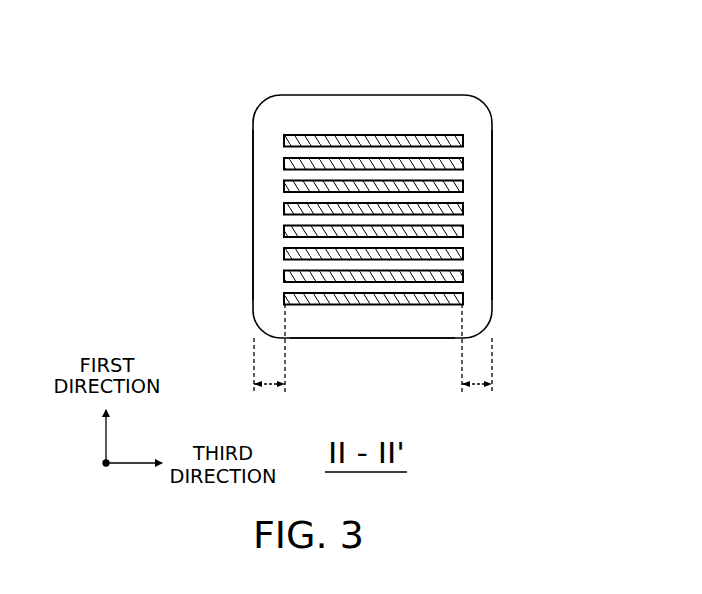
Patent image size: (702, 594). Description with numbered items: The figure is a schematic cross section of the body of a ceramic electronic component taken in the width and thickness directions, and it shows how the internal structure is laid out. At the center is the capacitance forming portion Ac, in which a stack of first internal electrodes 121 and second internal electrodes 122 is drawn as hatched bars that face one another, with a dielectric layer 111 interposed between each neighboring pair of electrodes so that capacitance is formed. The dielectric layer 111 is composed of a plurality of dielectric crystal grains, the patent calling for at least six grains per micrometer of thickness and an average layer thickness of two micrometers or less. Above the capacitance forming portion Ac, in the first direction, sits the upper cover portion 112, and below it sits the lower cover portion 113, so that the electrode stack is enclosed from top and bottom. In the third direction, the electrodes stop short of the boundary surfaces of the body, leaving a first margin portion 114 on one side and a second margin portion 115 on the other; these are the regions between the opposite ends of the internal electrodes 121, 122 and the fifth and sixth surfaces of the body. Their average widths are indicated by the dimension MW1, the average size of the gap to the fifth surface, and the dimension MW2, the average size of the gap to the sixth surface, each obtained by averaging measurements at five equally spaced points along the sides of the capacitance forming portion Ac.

The upper cover portion 112 is at (371, 96).
The dielectric layer 111 is at (458, 152).
The first internal electrode 121 is at (463, 136).
The second internal electrode 122 is at (463, 163).
The lower cover portion 113 is at (370, 338).
The first margin portion 114 is at (263, 243).
The second margin portion 115 is at (490, 247).
The capacitance forming portion Ac is at (282, 221).
The average width of first margin portion MW1 is at (269, 360).
The average width of second margin portion MW2 is at (480, 360).